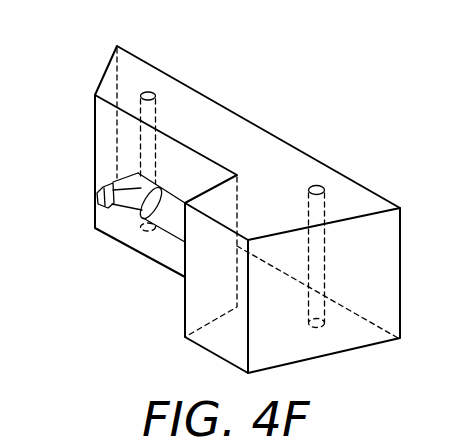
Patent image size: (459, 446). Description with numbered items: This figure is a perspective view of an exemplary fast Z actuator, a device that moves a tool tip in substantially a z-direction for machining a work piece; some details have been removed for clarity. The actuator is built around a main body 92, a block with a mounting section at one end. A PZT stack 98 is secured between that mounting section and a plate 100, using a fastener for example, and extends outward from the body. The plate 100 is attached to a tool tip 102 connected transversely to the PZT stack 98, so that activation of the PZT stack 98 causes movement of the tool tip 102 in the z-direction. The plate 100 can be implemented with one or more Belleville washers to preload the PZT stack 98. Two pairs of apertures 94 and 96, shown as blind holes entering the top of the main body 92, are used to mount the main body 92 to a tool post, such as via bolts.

The main body 92 is at (250, 133).
The apertures 94 is at (327, 203).
The apertures 96 is at (157, 107).
The PZT stack 98 is at (163, 218).
The plate 100 is at (132, 207).
The tool tip 102 is at (97, 197).